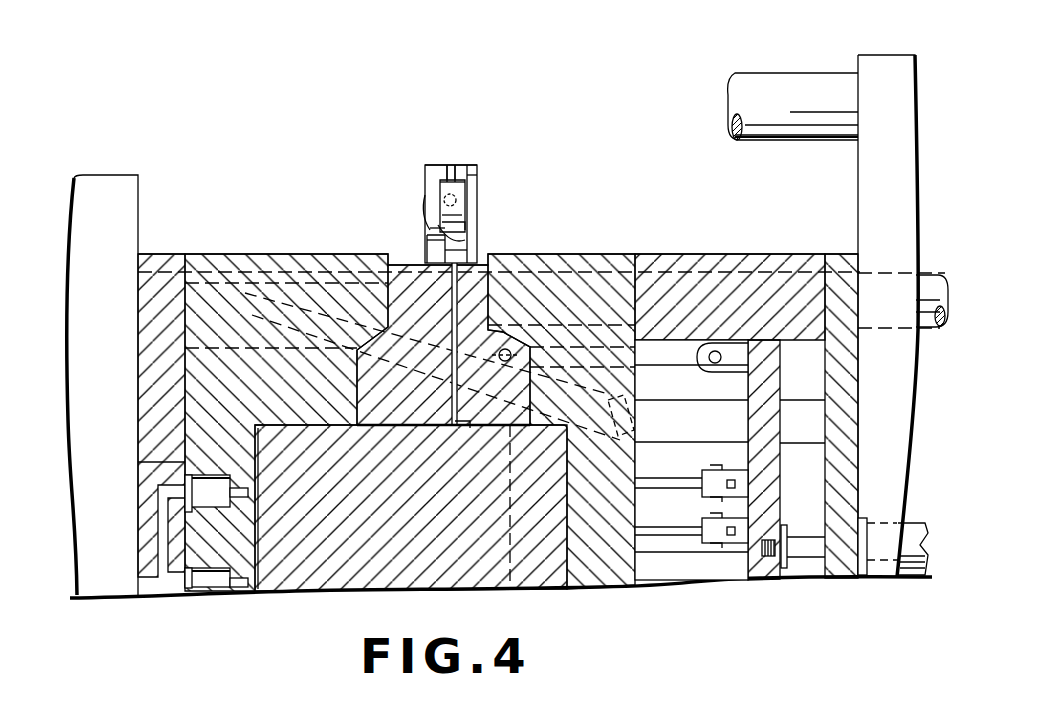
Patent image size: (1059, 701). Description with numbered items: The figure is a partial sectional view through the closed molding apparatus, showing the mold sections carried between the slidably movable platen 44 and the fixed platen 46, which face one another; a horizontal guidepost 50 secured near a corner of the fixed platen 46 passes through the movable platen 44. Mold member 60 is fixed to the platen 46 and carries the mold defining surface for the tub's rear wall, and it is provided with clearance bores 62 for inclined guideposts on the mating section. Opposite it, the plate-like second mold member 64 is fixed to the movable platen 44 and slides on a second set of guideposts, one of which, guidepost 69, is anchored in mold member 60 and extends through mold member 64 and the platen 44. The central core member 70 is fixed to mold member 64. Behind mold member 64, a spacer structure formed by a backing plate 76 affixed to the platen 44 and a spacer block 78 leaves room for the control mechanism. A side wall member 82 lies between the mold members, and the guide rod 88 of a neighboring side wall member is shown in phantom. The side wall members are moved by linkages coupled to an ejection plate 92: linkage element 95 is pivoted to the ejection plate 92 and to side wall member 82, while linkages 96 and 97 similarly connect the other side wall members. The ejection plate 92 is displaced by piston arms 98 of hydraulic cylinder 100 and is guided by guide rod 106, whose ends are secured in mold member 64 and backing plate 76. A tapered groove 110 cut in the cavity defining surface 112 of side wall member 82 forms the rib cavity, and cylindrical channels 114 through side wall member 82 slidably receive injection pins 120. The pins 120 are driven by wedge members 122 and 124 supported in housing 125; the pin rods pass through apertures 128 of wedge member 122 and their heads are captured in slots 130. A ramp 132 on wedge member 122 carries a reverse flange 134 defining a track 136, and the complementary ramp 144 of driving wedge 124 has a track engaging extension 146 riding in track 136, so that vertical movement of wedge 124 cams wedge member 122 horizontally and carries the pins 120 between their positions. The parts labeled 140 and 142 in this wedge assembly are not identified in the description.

The movable platen 44 is at (885, 70).
The fixed platen 46 is at (118, 183).
The guidepost 50 is at (785, 85).
The mold member 60 is at (195, 254).
The clearance bores 62 is at (222, 282).
The second mold member 64 is at (590, 265).
The guidepost 69 is at (925, 290).
The core member 70 is at (368, 539).
The backing plate 76 is at (838, 265).
The spacer block 78 is at (745, 265).
The side wall member 82 is at (388, 262).
The guide rod 88 is at (378, 352).
The ejection plate 92 is at (775, 508).
The linkage element 95 is at (690, 368).
The linkage 96 is at (690, 472).
The linkage 97 is at (680, 530).
The piston arms 98 is at (800, 555).
The hydraulic cylinder 100 is at (915, 530).
The guide rod 106 is at (683, 408).
The tapered groove 110 is at (468, 430).
The side wall cavity defining surface 112 is at (390, 430).
The boss cavity defining channels 114 is at (485, 318).
The pins 120 is at (450, 300).
The wedge member 122 is at (474, 240).
The driving wedge member 124 is at (460, 190).
The housing 125 is at (412, 185).
The apertures 128 is at (428, 250).
The slots 130 is at (428, 203).
The ramp 132 is at (462, 222).
The reverse flange 134 is at (462, 200).
The track 136 is at (462, 212).
The lever 140 is at (437, 225).
The base 142 is at (472, 252).
The ramp 144 is at (465, 232).
The track engaging extension 146 is at (437, 172).